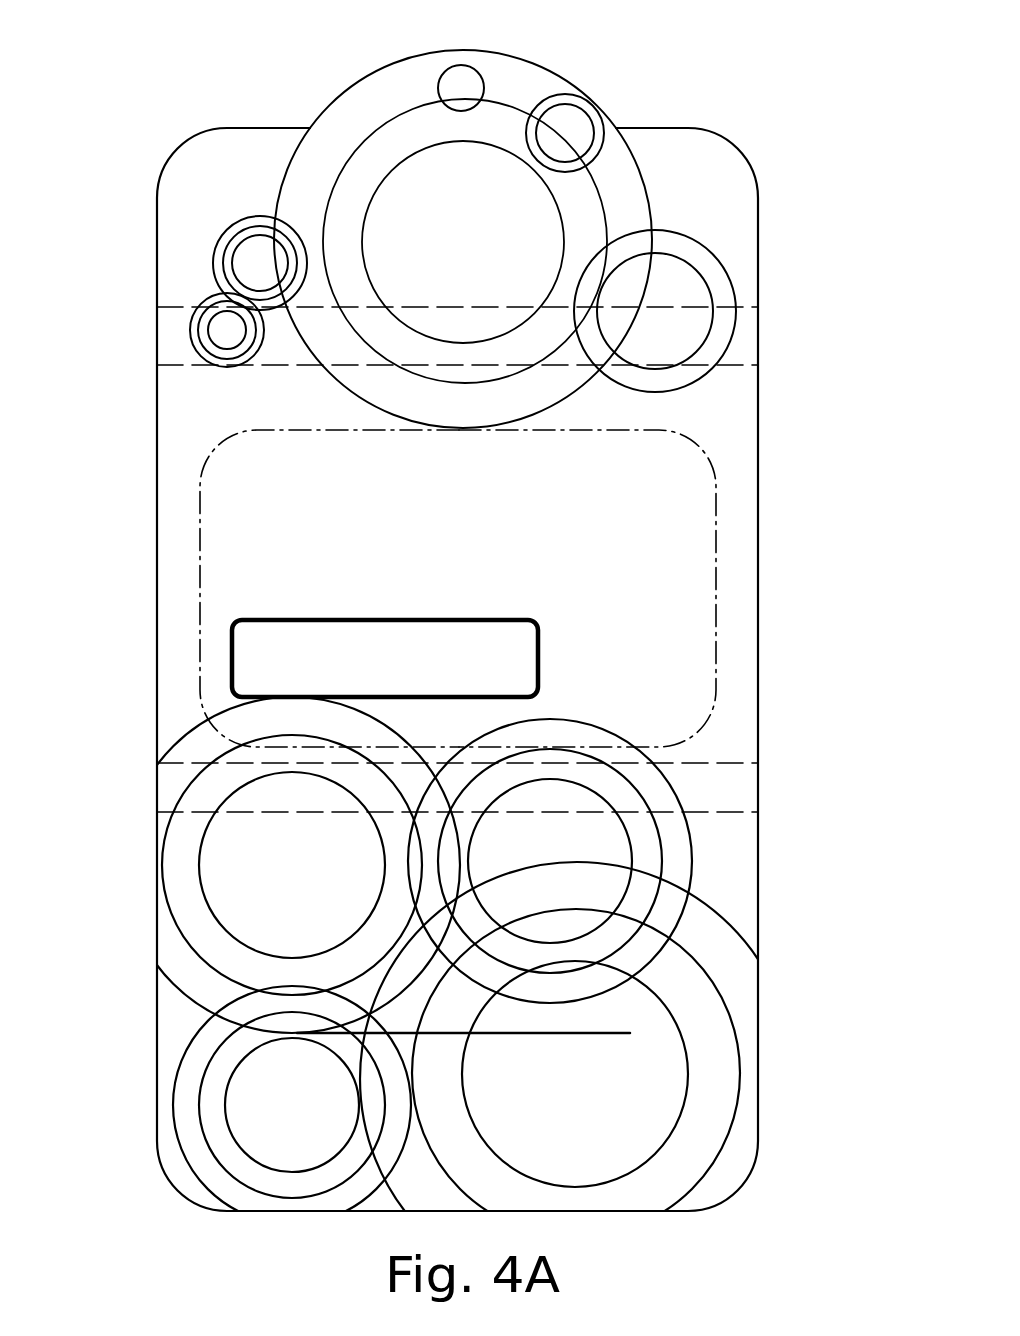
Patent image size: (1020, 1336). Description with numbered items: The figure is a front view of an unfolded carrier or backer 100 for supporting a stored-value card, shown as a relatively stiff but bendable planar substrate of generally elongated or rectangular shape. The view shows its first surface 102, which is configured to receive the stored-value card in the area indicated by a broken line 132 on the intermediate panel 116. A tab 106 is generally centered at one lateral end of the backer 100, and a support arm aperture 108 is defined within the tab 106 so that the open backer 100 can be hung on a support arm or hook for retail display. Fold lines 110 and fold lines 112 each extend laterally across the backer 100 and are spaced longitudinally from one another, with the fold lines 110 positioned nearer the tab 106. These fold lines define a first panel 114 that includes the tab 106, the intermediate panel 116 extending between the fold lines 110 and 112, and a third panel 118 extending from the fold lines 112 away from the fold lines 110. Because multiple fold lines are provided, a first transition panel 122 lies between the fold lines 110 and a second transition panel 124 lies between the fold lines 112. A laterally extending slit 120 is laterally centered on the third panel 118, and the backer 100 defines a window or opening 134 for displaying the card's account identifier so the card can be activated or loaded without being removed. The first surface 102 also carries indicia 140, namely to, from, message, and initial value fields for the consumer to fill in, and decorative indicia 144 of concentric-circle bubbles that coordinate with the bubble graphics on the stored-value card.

The backer 100 is at (723, 67).
The first surface 102 is at (738, 246).
The tab 106 is at (522, 85).
The support arm aperture 108 is at (460, 88).
The fold lines 110 is at (738, 307).
The fold lines 112 is at (714, 763).
The first panel 114 is at (185, 261).
The intermediate panel 116 is at (190, 579).
The third panel 118 is at (200, 1017).
The slit 120 is at (586, 1037).
The first transition panel 122 is at (173, 333).
The second transition panel 124 is at (172, 779).
The broken line 132 is at (715, 568).
The opening 134 is at (280, 661).
The indicia 140 is at (292, 1082).
The decorative indicia 144 is at (278, 348).